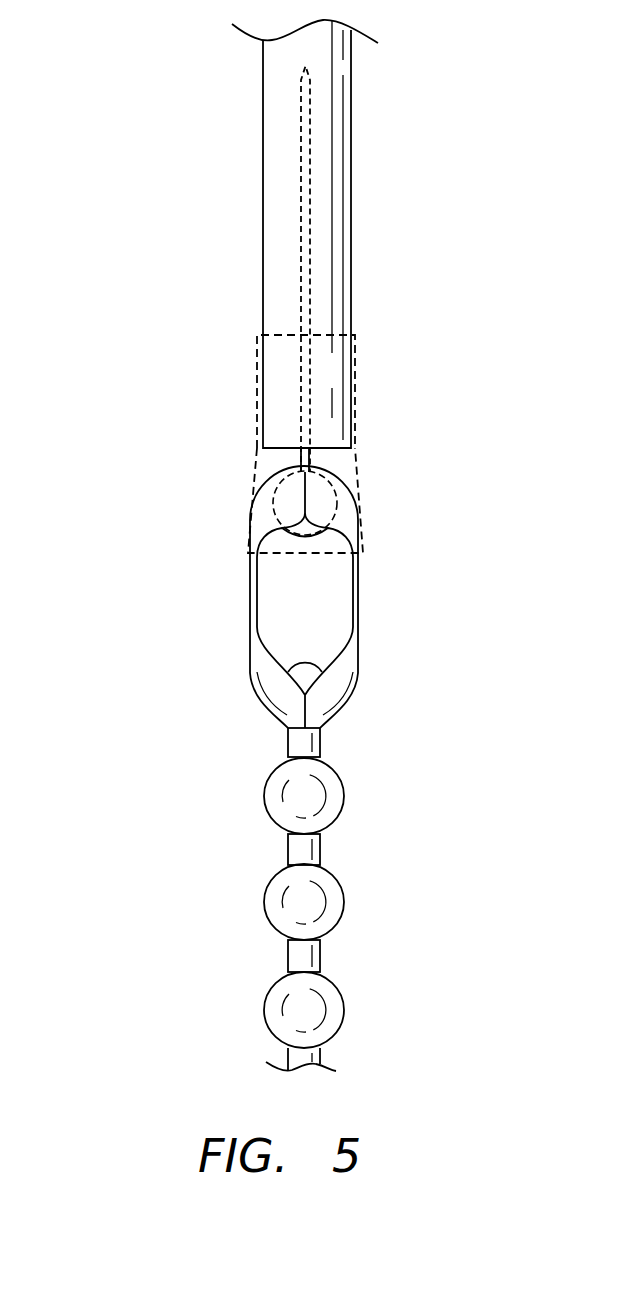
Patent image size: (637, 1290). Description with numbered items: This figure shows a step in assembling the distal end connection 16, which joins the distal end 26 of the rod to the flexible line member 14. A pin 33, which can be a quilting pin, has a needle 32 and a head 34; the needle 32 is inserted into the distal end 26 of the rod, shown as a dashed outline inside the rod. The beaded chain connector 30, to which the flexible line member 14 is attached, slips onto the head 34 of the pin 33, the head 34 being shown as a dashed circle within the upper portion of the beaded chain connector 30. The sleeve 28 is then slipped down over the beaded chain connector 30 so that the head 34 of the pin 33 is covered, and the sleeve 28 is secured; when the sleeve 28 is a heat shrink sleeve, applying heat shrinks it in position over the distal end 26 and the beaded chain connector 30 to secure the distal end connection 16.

The flexible line member 14 is at (345, 893).
The distal end connection 16 is at (254, 584).
The distal end 26 is at (353, 210).
The sleeve 28 is at (362, 462).
The beaded chain connector 30 is at (362, 672).
The needle 32 is at (297, 128).
The pin 33 is at (295, 457).
The head 34 is at (270, 512).